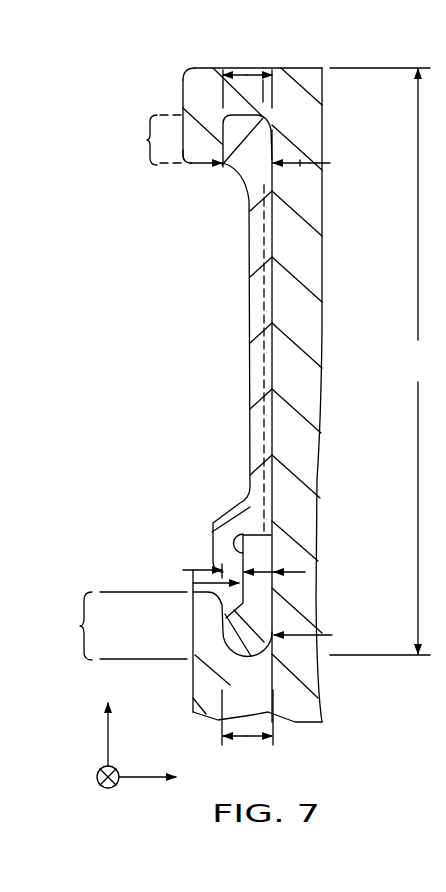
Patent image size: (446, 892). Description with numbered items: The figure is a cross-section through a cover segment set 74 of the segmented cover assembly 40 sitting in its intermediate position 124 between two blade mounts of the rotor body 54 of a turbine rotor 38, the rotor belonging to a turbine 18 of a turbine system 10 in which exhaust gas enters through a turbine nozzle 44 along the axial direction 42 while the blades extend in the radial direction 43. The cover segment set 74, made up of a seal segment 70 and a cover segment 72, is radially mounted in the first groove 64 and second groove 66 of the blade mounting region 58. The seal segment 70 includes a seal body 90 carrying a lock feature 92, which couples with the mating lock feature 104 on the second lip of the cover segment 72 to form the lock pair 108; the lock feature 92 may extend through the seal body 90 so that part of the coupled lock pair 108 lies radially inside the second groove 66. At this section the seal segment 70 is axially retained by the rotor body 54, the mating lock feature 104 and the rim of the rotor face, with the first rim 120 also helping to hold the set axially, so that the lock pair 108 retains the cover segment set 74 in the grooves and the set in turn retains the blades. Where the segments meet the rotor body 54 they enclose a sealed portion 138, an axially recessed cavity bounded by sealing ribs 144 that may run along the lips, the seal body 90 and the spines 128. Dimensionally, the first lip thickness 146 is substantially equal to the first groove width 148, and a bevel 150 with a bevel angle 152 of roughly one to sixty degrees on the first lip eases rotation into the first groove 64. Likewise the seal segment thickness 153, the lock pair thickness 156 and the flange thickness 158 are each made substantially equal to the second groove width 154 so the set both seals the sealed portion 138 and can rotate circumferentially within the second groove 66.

The turbine system 10 is at (120, 187).
The turbine 18 is at (105, 228).
The turbine rotor 38 is at (250, 648).
The segmented cover assembly 40 is at (102, 522).
The axial direction 42 is at (146, 775).
The radial direction 43 is at (108, 743).
The turbine nozzle 44 is at (233, 132).
The rotor body 54 is at (308, 138).
The blade mounting region 58 is at (380, 361).
The first groove 64 is at (170, 140).
The second groove 66 is at (119, 626).
The seal segment 70 is at (216, 652).
The cover segment 72 is at (204, 326).
The cover segment set 74 is at (255, 537).
The seal body 90 is at (306, 618).
The lock feature 92 is at (228, 662).
The mating lock feature 104 is at (243, 602).
The lock pair 108 is at (222, 635).
The first rim 120 is at (189, 158).
The intermediate position 124 is at (160, 447).
The spines 128 is at (273, 437).
The sealed portion 138 is at (267, 276).
The sealing ribs 144 is at (273, 358).
The first lip thickness 146 is at (302, 168).
The first groove width 148 is at (248, 74).
The bevel 150 is at (301, 140).
The bevel angle 152 is at (266, 92).
The seal segment thickness 153 is at (302, 638).
The second groove width 154 is at (248, 738).
The lock pair thickness 156 is at (187, 570).
The flange thickness 158 is at (302, 572).